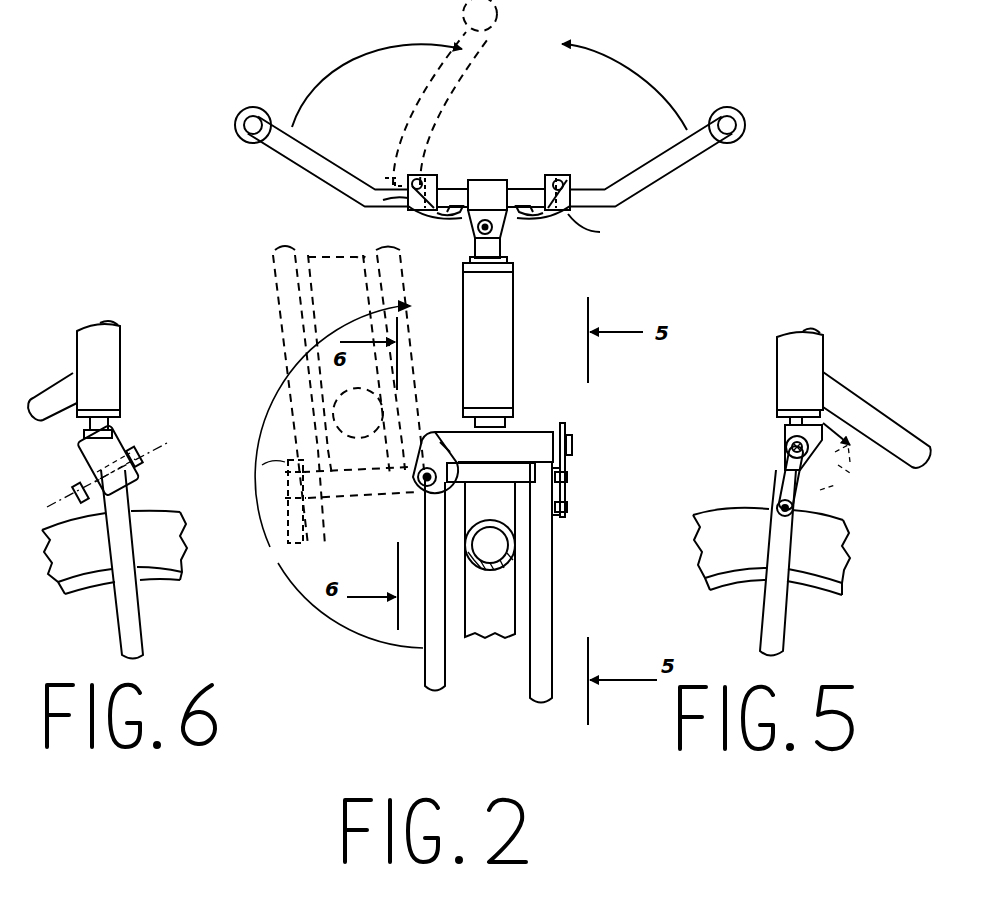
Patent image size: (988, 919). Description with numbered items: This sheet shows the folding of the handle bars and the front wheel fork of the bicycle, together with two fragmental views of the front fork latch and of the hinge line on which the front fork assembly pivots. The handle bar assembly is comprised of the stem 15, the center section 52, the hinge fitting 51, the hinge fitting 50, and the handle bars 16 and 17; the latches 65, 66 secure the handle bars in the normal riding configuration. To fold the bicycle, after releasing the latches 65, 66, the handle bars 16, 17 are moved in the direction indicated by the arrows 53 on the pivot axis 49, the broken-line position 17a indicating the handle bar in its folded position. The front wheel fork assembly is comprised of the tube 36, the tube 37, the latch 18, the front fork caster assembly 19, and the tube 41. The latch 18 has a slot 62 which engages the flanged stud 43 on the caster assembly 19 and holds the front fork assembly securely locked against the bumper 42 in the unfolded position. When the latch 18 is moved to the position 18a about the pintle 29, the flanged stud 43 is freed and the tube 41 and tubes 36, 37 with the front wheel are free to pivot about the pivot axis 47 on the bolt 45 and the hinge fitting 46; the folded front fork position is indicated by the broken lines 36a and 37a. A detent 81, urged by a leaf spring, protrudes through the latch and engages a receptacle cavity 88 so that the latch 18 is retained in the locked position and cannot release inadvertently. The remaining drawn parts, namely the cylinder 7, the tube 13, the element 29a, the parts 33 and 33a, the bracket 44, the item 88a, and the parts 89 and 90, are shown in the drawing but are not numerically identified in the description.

In FIG. 2, the hydraulic cylinder 7 is at (510, 323).
In FIG. 6, the hydraulic cylinder 7 is at (119, 366).
In FIG. 5, the hydraulic cylinder 7 is at (786, 362).
In FIG. 6, the connecting tube 13 is at (73, 375).
In FIG. 5, the connecting tube 13 is at (833, 382).
In FIG. 2, the stem 15 is at (470, 222).
In FIG. 2, the handle bar 16 is at (678, 160).
In FIG. 2, the handle bar 17 is at (292, 156).
In FIG. 2, the handle bar folded position 17a is at (437, 93).
In FIG. 2, the latch 18 is at (564, 424).
In FIG. 5, the latch 18 is at (825, 495).
In FIG. 2, the latch released position 18a is at (293, 525).
In FIG. 5, the latch released position 18a is at (862, 458).
In FIG. 2, the front fork caster assembly 19 is at (517, 432).
In FIG. 6, the front fork caster assembly 19 is at (86, 435).
In FIG. 5, the front fork caster assembly 19 is at (786, 428).
In FIG. 2, the pintle 29 is at (572, 508).
In FIG. 2, the nut alternate position 29a is at (262, 464).
In FIG. 2, the head tube 33 is at (507, 632).
In FIG. 6, the head tube 33 is at (162, 574).
In FIG. 5, the head tube 33 is at (823, 562).
In FIG. 2, the head tube alternate position 33a is at (346, 252).
In FIG. 2, the tube 36 is at (553, 580).
In FIG. 5, the tube 36 is at (782, 637).
In FIG. 2, the tube folded position 36a is at (287, 302).
In FIG. 2, the tube 37 is at (424, 656).
In FIG. 6, the tube 37 is at (135, 632).
In FIG. 2, the tube folded position 37a is at (399, 327).
In FIG. 2, the tube 41 is at (462, 486).
In FIG. 2, the bumper 42 is at (494, 520).
In FIG. 5, the bumper 42 is at (780, 466).
In FIG. 2, the flanged stud 43 is at (573, 440).
In FIG. 2, the hinge bracket 44 is at (420, 463).
In FIG. 6, the hinge bracket 44 is at (117, 438).
In FIG. 2, the bolt 45 is at (420, 485).
In FIG. 6, the hinge fitting 46 is at (133, 486).
In FIG. 6, the pivot axis 47 is at (168, 446).
In FIG. 2, the pivot axis 49 is at (420, 179).
In FIG. 2, the hinge fitting 50 is at (412, 214).
In FIG. 2, the hinge fitting 51 is at (437, 186).
In FIG. 2, the center section 52 is at (515, 214).
In FIG. 2, the arrows 53 is at (384, 48).
In FIG. 5, the slot 62 is at (833, 480).
In FIG. 2, the latch 65 is at (570, 218).
In FIG. 2, the latch 66 is at (441, 215).
In FIG. 2, the detent 81 is at (573, 478).
In FIG. 2, the receptacle cavity 88 is at (572, 487).
In FIG. 2, the bracket alternate position 88a is at (307, 503).
In FIG. 2, the lever 89 is at (382, 201).
In FIG. 2, the cable 90 is at (388, 180).